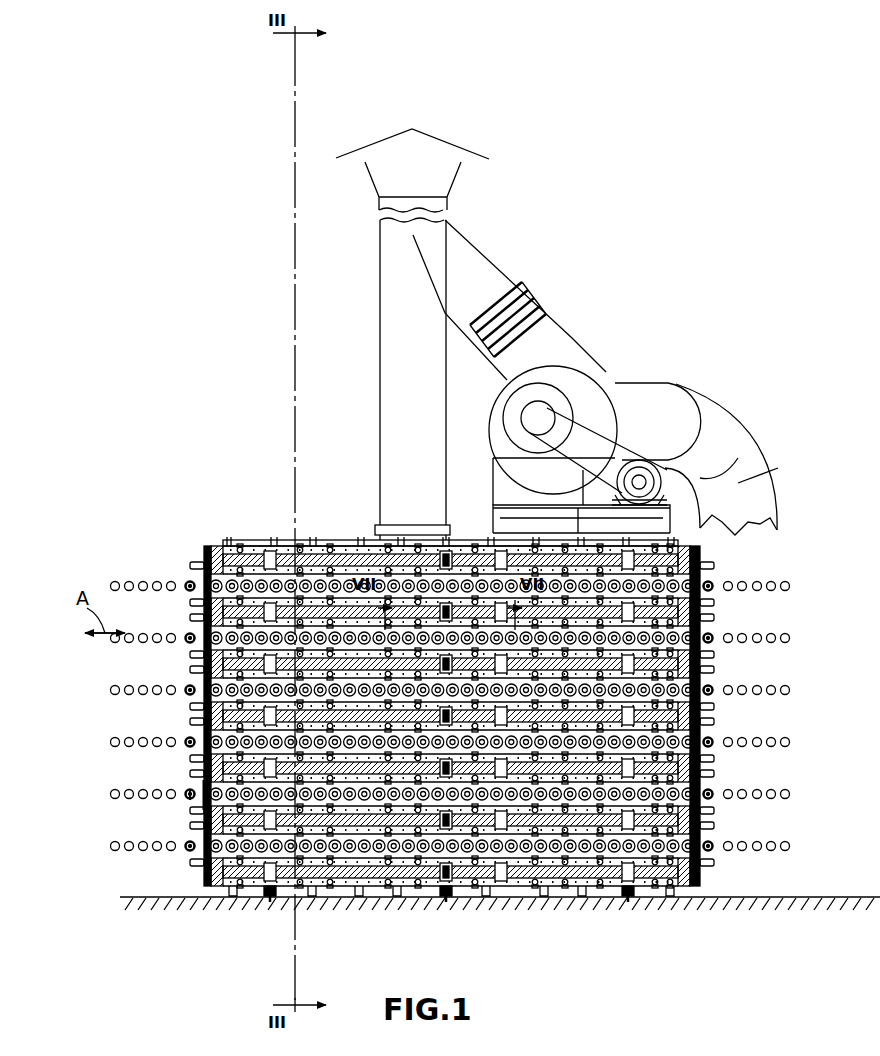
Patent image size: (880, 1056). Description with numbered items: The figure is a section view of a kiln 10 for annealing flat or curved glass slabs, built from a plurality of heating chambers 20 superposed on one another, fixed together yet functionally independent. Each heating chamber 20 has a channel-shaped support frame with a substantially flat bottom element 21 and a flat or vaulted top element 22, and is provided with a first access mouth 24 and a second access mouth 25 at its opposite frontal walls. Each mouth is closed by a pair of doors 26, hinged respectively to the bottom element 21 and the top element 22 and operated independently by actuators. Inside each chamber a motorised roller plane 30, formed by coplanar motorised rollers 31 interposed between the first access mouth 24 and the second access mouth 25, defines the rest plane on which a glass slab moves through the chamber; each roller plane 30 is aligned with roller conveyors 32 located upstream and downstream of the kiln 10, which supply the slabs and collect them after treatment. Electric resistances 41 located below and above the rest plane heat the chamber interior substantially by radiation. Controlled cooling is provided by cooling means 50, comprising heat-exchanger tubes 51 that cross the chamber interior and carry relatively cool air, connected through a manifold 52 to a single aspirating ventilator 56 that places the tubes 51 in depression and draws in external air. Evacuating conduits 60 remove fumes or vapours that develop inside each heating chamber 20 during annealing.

The kiln 10 is at (200, 340).
The heating chamber 20 is at (177, 568).
The bottom element 21 is at (248, 882).
The top element 22 is at (250, 562).
The first access mouth 24 is at (204, 796).
The second access mouth 25 is at (700, 575).
The doors 26 is at (205, 792).
The motorised roller plane 30 is at (385, 890).
The motorised rollers 31 is at (520, 888).
The roller conveyors 32 is at (118, 850).
The electric resistances 41 is at (285, 566).
The cooling means 50 is at (606, 377).
The heat-exchanger tubes 51 is at (360, 562).
The manifold 52 is at (745, 482).
The aspirating ventilator 56 is at (565, 385).
The evacuating conduits 60 is at (452, 562).